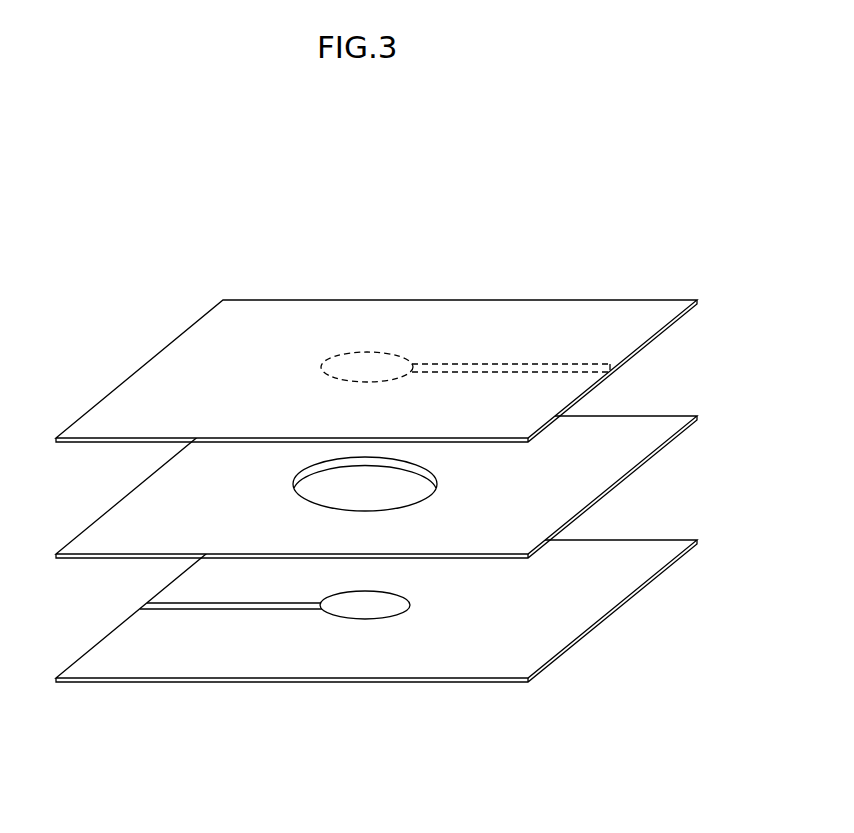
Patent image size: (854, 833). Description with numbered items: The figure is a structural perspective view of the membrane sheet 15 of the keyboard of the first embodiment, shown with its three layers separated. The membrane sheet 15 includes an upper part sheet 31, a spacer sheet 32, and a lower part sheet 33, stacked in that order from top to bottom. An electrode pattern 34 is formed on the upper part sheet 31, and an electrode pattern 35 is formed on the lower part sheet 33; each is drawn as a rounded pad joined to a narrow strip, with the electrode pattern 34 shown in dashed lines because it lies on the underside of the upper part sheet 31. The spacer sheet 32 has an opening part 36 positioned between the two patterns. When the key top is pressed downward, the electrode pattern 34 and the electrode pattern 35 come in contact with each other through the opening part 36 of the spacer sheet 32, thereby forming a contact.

The membrane sheet 15 is at (365, 472).
The upper part sheet 31 is at (543, 320).
The spacer sheet 32 is at (653, 422).
The lower part sheet 33 is at (469, 648).
The electrode pattern 34 is at (370, 367).
The electrode pattern 35 is at (353, 620).
The opening part 36 is at (313, 486).